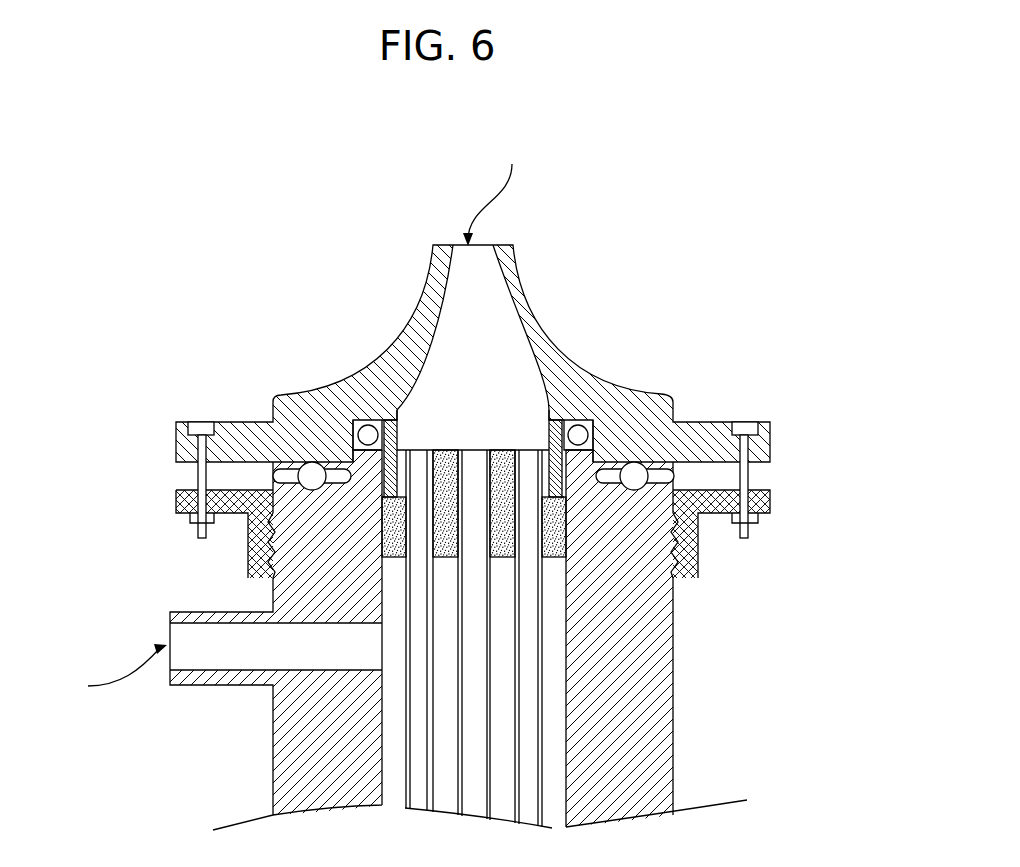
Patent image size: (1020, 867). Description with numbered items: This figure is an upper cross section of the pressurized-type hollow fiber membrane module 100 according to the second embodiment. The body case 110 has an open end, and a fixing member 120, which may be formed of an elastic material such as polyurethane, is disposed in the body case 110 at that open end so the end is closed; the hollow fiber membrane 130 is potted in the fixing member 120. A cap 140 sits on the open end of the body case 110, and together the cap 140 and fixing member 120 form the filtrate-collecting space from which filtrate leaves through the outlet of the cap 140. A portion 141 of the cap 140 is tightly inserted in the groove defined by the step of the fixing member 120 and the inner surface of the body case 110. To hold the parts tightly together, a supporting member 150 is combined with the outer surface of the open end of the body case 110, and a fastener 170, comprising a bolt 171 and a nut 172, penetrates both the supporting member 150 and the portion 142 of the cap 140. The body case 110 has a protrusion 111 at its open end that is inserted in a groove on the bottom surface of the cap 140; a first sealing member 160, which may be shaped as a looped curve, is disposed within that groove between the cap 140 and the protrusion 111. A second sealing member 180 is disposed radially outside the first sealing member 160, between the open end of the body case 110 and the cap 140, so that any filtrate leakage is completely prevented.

The pressurized-type hollow fiber membrane module 100 is at (710, 304).
The body case 110 is at (290, 597).
The protrusion 111 is at (345, 455).
The fixing member 120 is at (504, 455).
The hollow fiber membrane 130 is at (547, 450).
The cap 140 is at (414, 336).
The portion of the cap 141 is at (388, 455).
The portion of the cap 142 is at (188, 443).
The supporting member 150 is at (176, 505).
The first sealing member 160 is at (368, 425).
The fastener 170 is at (183, 349).
The bolt 171 is at (208, 426).
The nut 172 is at (244, 505).
The second sealing member 180 is at (306, 462).